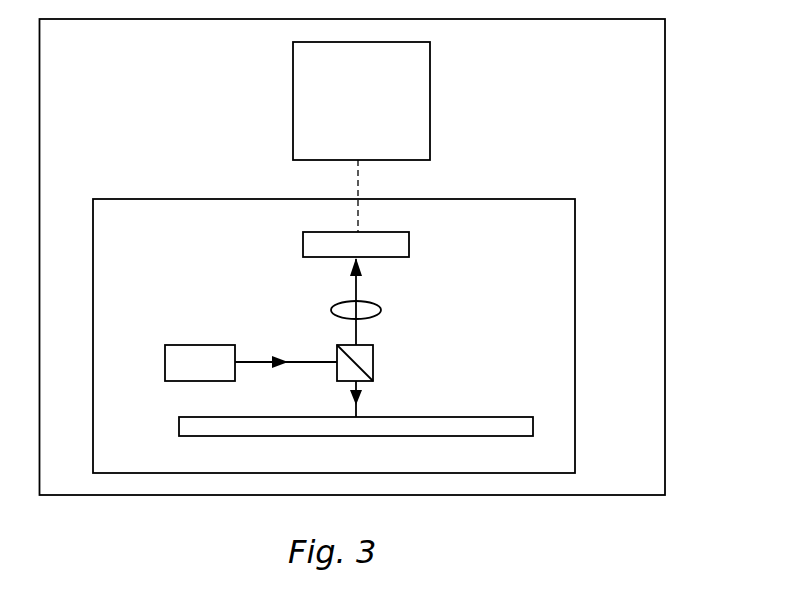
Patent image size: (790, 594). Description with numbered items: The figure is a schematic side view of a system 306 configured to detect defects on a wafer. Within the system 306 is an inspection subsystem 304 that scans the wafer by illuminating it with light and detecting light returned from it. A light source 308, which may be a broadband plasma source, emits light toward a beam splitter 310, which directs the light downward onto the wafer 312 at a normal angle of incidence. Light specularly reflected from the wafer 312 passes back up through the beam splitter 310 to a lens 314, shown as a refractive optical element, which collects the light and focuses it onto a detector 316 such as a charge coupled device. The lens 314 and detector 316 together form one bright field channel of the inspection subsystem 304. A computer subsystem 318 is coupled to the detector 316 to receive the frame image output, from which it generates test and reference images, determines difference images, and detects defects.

The inspection subsystem 304 is at (368, 336).
The system 306 is at (391, 257).
The light source 308 is at (227, 349).
The beam splitter 310 is at (387, 361).
The wafer 312 is at (326, 412).
The lens 314 is at (387, 298).
The detector 316 is at (319, 240).
The computer subsystem 318 is at (361, 137).